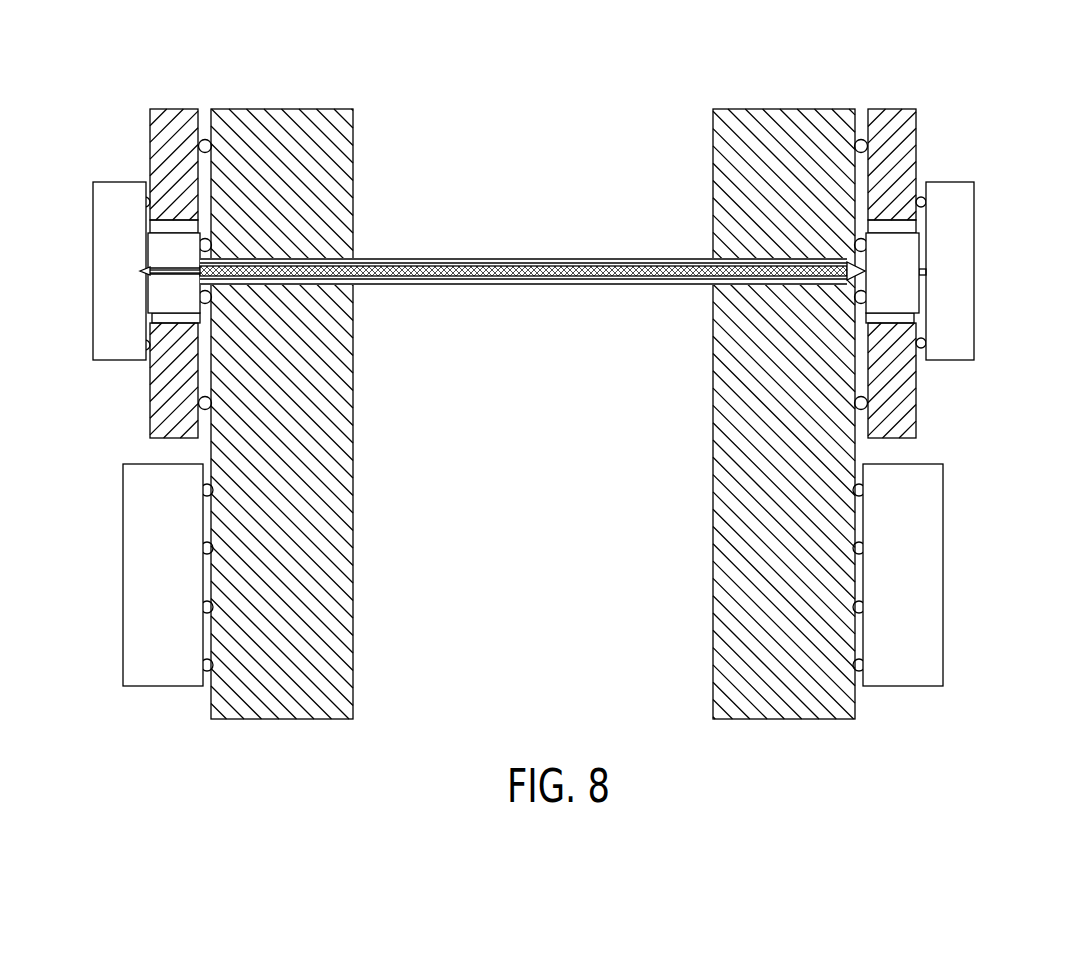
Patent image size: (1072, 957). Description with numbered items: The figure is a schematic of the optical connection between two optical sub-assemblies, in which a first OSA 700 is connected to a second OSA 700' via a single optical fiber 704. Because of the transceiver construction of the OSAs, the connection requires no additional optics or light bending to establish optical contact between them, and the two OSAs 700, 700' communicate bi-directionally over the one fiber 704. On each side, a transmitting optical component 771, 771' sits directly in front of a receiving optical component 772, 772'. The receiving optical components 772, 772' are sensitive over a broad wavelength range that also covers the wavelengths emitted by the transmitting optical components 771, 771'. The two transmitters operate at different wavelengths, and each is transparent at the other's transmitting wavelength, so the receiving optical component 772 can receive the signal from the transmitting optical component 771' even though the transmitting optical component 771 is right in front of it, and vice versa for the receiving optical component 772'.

The OSA 700 is at (238, 366).
The OSA 700' is at (828, 365).
The optical fiber 704 is at (497, 258).
The transmitting optical component 771 is at (157, 219).
The transmitting optical component 771' is at (911, 211).
The receiving optical component 772 is at (82, 271).
The receiving optical component 772' is at (984, 271).